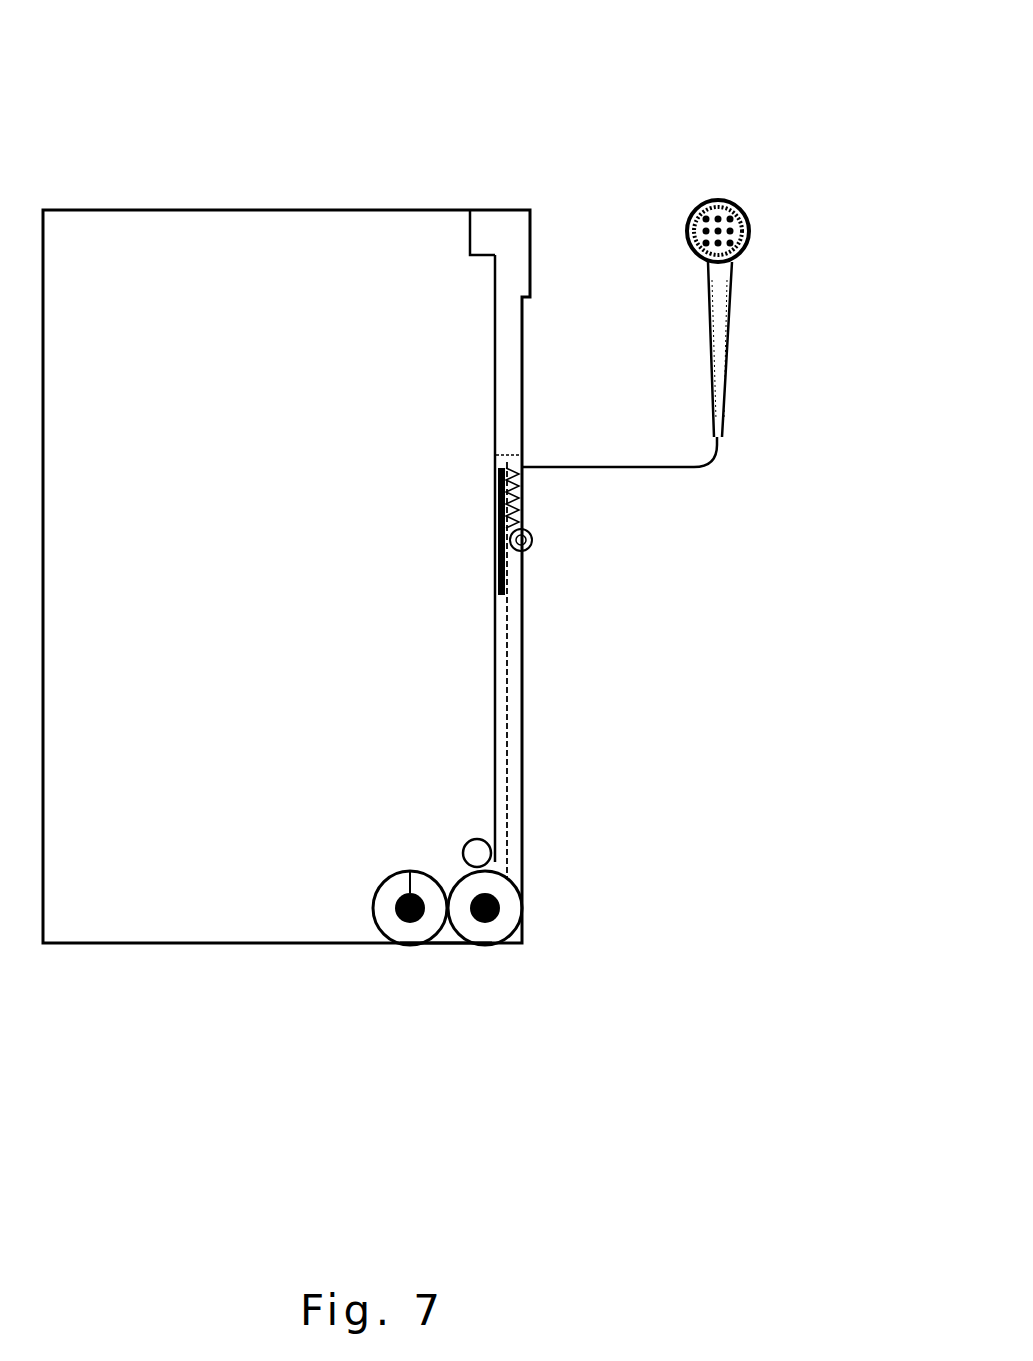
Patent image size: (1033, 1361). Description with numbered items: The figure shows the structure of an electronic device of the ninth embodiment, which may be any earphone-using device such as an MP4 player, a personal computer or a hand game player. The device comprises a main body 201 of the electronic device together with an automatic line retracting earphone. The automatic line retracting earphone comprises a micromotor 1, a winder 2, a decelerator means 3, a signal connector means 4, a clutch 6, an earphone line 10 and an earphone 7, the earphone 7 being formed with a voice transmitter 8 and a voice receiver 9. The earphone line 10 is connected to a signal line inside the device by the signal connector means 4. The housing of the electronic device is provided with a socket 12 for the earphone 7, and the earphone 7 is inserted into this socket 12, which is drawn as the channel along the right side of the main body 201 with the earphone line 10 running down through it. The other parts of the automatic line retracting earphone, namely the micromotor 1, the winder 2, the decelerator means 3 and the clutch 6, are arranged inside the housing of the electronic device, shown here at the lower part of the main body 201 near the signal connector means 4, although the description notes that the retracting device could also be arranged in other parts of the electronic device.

The main body 201 is at (240, 290).
The socket 12 is at (500, 328).
The earphone line 10 is at (508, 697).
The voice transmitter 8 is at (730, 412).
The earphone 7 is at (735, 313).
The voice receiver 9 is at (745, 248).
The signal connector means 4 is at (492, 853).
The micromotor 1 is at (410, 922).
The winder 2 is at (498, 933).
The clutch 6 is at (487, 897).
The decelerator means 3 is at (445, 933).